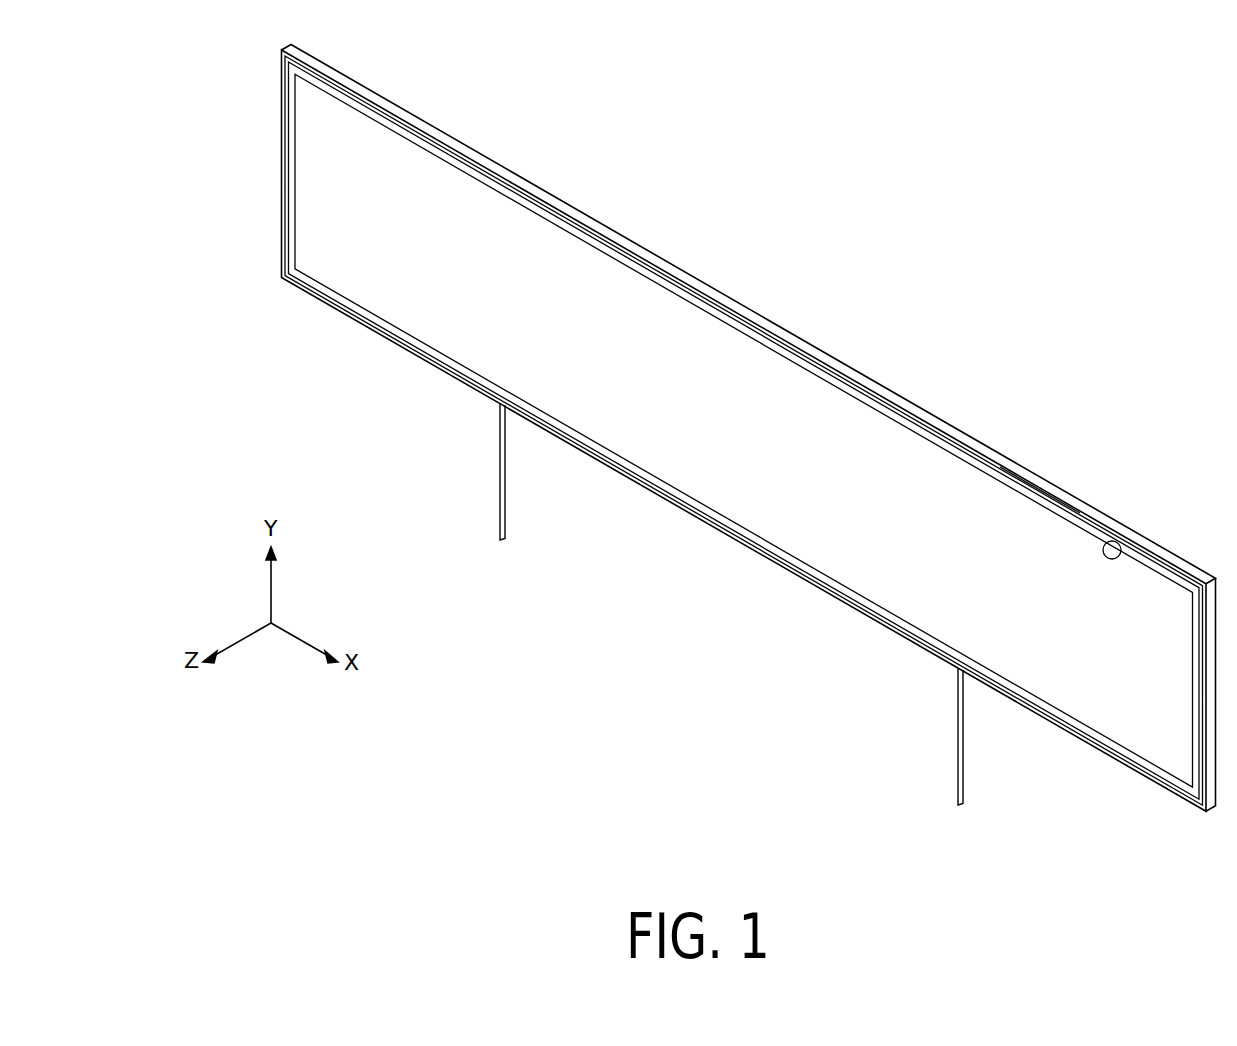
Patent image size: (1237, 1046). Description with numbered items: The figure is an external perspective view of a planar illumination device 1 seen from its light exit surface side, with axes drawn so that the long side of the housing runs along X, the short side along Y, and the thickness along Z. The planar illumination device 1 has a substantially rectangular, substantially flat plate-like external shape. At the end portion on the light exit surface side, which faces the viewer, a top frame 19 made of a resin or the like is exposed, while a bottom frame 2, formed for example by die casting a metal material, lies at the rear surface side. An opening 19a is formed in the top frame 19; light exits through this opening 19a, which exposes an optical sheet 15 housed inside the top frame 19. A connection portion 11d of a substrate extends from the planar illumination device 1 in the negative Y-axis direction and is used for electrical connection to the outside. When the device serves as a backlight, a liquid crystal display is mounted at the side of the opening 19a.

The planar illumination device 1 is at (864, 332).
The bottom frame 2 is at (978, 442).
The optical sheet 15 is at (807, 543).
The top frame 19 is at (1043, 500).
The opening 19a is at (1114, 541).
The connection portion 11d is at (504, 542).